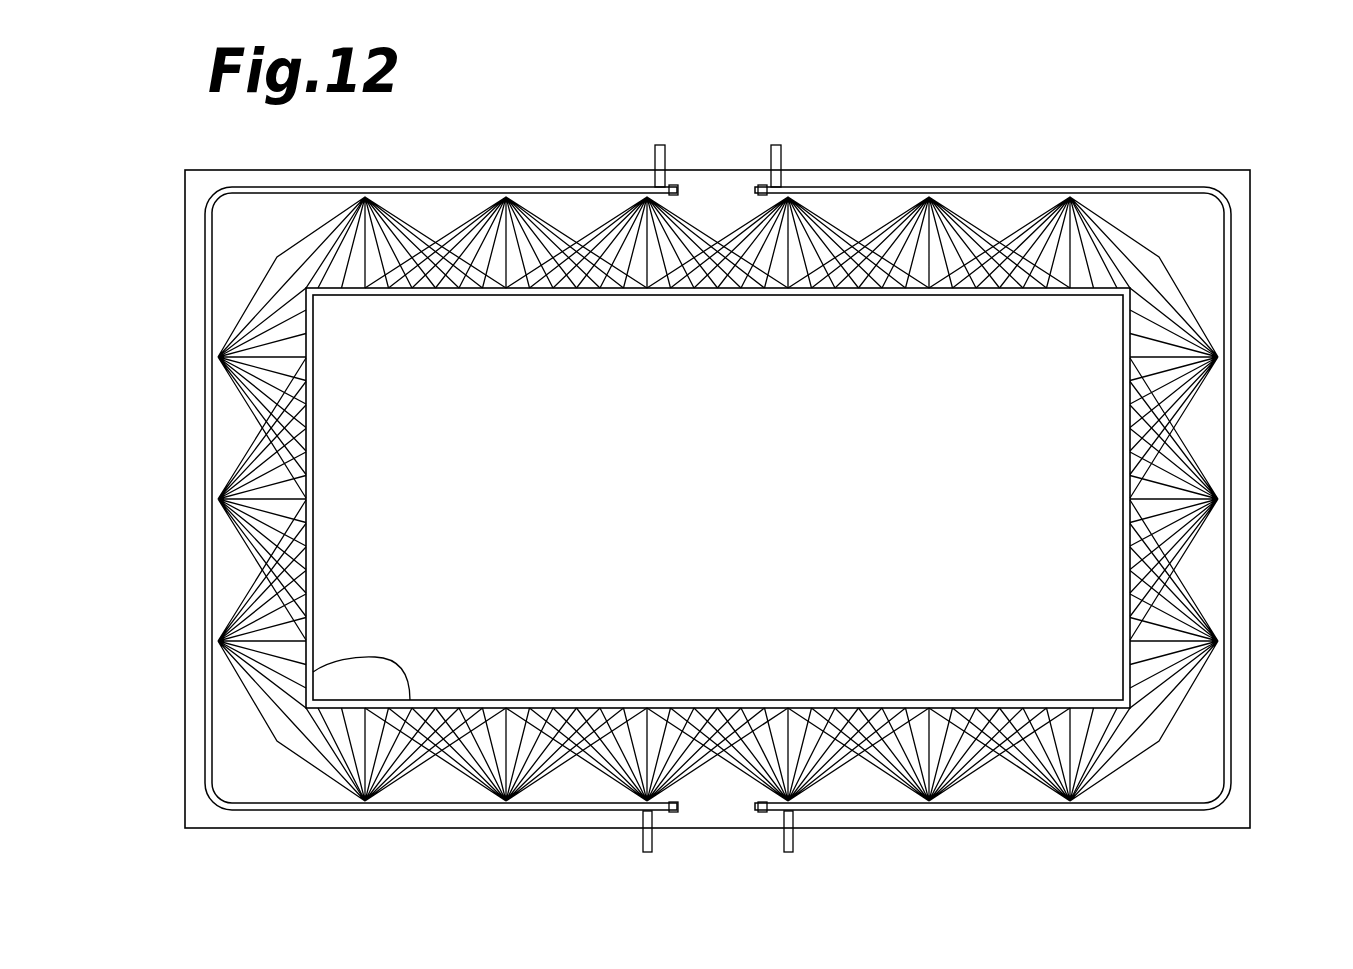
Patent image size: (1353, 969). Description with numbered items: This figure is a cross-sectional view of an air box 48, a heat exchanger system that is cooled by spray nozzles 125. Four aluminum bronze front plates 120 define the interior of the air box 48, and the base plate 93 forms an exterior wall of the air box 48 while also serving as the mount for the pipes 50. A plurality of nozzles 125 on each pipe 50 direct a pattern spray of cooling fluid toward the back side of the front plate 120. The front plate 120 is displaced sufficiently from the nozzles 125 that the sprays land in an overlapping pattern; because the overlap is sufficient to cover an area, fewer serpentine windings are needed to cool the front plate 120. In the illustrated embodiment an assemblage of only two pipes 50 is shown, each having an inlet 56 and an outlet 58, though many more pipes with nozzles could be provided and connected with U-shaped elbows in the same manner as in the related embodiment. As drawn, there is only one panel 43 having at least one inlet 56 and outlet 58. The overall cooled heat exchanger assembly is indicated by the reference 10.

The heat exchanger assembly 10 is at (1072, 112).
The panel 43 is at (724, 700).
The air box 48 is at (157, 204).
The pipe 50 is at (207, 408).
The inlet 56 is at (643, 852).
The outlet 58 is at (660, 146).
The base plate 93 is at (1250, 300).
The aluminum bronze front plate 120 is at (345, 664).
The spray nozzle 125 is at (216, 641).